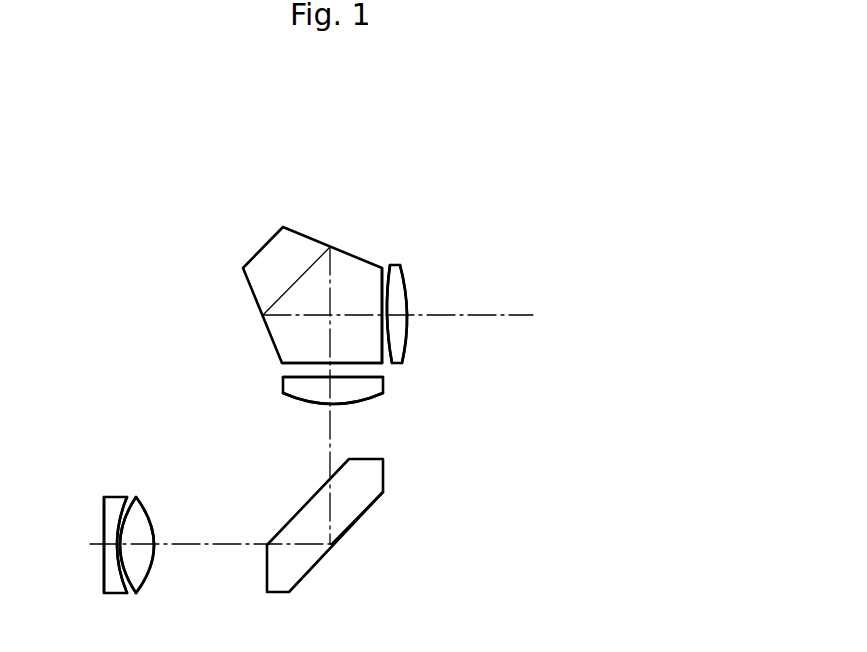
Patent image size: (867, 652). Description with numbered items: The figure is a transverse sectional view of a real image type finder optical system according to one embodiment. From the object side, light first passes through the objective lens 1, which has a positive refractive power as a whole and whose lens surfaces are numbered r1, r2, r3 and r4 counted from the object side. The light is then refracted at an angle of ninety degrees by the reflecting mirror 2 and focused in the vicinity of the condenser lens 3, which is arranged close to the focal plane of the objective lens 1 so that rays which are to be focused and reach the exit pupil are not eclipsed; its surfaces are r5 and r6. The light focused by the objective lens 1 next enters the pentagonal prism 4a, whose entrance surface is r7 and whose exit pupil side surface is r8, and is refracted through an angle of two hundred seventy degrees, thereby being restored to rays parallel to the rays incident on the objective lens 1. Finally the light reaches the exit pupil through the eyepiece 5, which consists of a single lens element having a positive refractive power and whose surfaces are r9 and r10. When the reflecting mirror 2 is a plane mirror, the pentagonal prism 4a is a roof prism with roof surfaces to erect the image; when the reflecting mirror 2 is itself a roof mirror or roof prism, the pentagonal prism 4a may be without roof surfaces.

The objective lens 1 is at (147, 603).
The reflecting mirror 2 is at (372, 476).
The condenser lens 3 is at (372, 385).
The pentagonal prism 4a is at (357, 268).
The eyepiece 5 is at (398, 275).
The first surface r1 is at (102, 510).
The second surface r2 is at (120, 507).
The third surface r3 is at (136, 508).
The fourth surface r4 is at (143, 512).
The fifth surface r5 is at (315, 404).
The sixth surface r6 is at (305, 380).
The seventh surface r7 is at (303, 363).
The eighth surface r8 is at (385, 303).
The ninth surface r9 is at (390, 330).
The tenth surface r10 is at (403, 350).